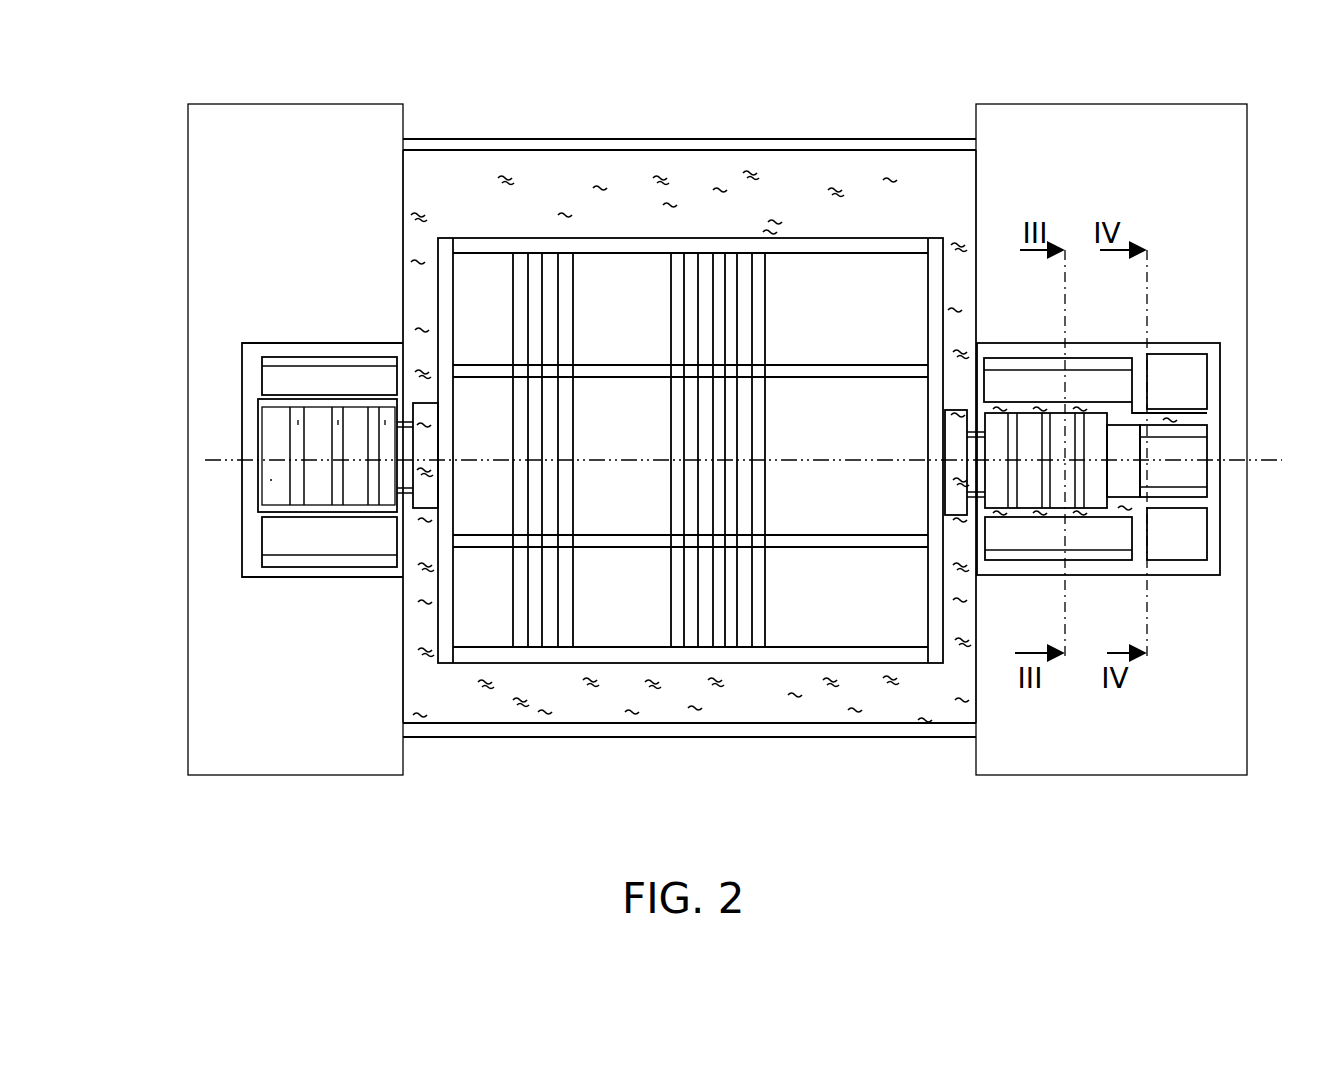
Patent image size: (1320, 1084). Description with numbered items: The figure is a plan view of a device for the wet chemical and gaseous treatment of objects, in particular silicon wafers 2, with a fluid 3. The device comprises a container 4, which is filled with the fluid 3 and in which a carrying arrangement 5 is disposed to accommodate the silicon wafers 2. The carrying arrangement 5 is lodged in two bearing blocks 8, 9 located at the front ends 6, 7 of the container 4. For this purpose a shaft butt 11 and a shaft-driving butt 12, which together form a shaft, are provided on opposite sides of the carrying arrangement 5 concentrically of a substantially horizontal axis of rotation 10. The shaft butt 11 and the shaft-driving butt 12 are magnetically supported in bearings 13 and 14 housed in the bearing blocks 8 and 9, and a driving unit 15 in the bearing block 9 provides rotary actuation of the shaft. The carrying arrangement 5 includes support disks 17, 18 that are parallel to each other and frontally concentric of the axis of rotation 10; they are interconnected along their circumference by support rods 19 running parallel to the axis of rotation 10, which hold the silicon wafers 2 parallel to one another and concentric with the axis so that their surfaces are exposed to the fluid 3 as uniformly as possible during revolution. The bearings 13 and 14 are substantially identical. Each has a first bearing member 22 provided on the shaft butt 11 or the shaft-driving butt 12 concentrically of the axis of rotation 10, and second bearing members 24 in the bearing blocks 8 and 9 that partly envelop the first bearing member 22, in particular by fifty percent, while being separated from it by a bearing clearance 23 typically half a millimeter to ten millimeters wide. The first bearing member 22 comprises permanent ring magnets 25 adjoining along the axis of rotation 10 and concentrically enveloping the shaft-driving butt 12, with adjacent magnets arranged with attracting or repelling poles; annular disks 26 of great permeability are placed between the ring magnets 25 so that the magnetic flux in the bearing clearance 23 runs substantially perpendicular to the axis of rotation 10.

The silicon wafers 2 is at (670, 307).
The fluid 3 is at (520, 706).
The container 4 is at (612, 739).
The carrying arrangement 5 is at (812, 236).
The front end 6 is at (405, 686).
The front end 7 is at (975, 687).
The bearing block 8 is at (296, 777).
The bearing block 9 is at (1104, 777).
The axis of rotation 10 is at (1278, 463).
The shaft butt 11 is at (405, 444).
The shaft-driving butt 12 is at (1127, 423).
The bearing 13 is at (238, 392).
The bearing 14 is at (1121, 575).
The driving unit 15 is at (721, 721).
The support disk 17 is at (445, 268).
The support disk 18 is at (935, 283).
The support rods 19 is at (865, 248).
The first bearing member 22 is at (272, 481).
The bearing clearance 23 is at (284, 402).
The second bearing members 24 is at (368, 569).
The permanent ring magnets 25 is at (390, 425).
The annular disks 26 is at (373, 485).